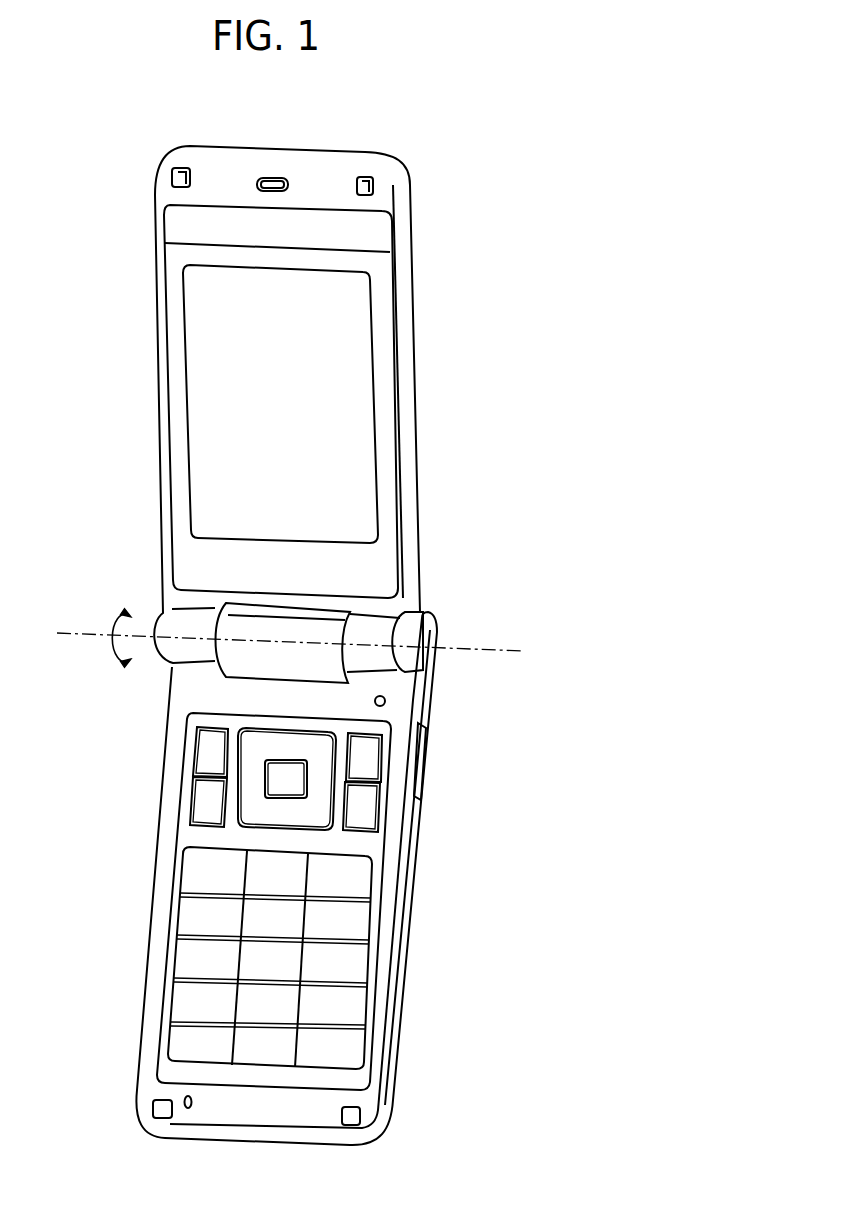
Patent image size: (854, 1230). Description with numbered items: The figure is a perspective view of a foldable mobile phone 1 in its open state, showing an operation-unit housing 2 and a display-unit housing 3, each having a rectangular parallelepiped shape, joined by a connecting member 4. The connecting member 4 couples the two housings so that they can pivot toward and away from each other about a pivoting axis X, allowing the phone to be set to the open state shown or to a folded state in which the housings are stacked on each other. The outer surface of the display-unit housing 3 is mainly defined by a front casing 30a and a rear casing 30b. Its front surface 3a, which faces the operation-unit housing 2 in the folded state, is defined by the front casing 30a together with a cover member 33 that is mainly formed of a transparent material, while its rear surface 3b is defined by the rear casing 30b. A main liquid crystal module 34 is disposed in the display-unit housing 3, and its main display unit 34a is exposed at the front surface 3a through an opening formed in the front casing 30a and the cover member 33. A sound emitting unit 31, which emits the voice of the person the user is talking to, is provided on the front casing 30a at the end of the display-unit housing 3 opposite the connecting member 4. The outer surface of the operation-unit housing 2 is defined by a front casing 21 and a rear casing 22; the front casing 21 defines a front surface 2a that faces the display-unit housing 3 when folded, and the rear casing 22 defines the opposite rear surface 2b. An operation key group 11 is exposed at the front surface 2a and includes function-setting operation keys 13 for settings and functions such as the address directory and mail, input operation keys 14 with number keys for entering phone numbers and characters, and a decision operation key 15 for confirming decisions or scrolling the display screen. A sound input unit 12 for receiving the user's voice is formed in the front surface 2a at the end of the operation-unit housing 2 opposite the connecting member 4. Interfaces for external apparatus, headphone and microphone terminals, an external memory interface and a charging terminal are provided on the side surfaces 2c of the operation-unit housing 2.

The mobile phone 1 is at (448, 130).
The operation-unit housing 2 is at (432, 833).
The front surface 2a is at (405, 692).
The rear surface 2b is at (395, 1097).
The side surfaces 2c is at (405, 975).
The display-unit housing 3 is at (432, 334).
The front surface 3a is at (214, 378).
The rear surface 3b is at (463, 391).
The connecting member 4 is at (444, 622).
The operation key group 11 is at (103, 744).
The sound input unit 12 is at (185, 1110).
The function-setting operation keys 13 is at (203, 798).
The input operation keys 14 is at (212, 873).
The decision operation key 15 is at (283, 775).
The front casing 21 is at (345, 889).
The rear casing 22 is at (334, 1108).
The front casing 30a is at (158, 192).
The rear casing 30b is at (408, 477).
The sound emitting unit 31 is at (276, 178).
The cover member 33 is at (375, 233).
The main liquid crystal module 34 is at (218, 404).
The main display unit 34a is at (205, 412).
The pivoting axis X is at (120, 614).